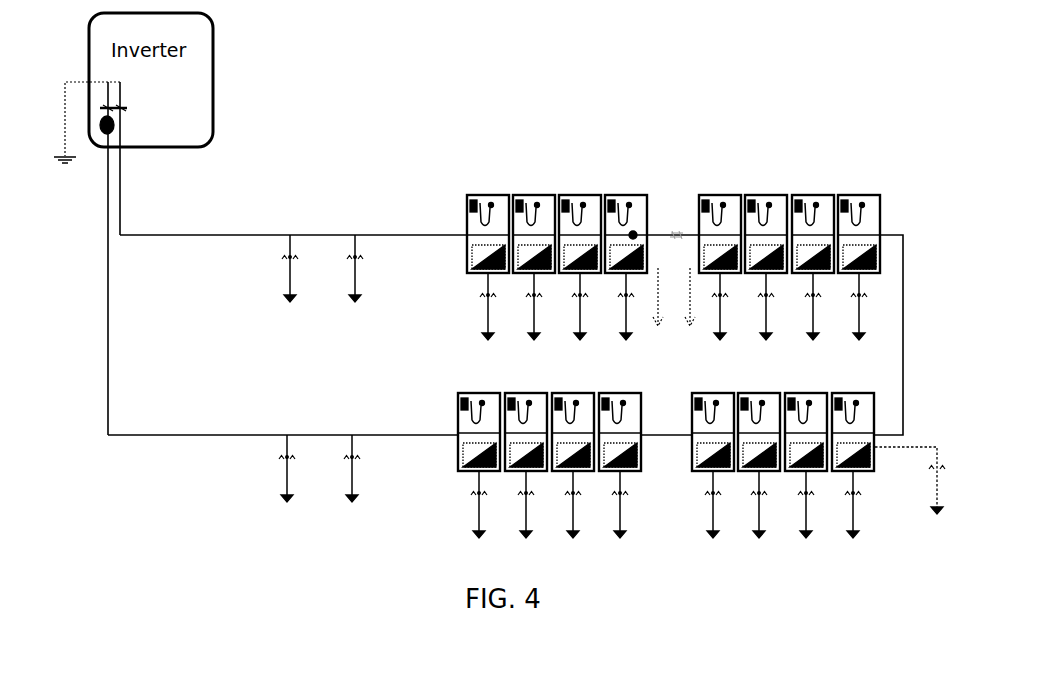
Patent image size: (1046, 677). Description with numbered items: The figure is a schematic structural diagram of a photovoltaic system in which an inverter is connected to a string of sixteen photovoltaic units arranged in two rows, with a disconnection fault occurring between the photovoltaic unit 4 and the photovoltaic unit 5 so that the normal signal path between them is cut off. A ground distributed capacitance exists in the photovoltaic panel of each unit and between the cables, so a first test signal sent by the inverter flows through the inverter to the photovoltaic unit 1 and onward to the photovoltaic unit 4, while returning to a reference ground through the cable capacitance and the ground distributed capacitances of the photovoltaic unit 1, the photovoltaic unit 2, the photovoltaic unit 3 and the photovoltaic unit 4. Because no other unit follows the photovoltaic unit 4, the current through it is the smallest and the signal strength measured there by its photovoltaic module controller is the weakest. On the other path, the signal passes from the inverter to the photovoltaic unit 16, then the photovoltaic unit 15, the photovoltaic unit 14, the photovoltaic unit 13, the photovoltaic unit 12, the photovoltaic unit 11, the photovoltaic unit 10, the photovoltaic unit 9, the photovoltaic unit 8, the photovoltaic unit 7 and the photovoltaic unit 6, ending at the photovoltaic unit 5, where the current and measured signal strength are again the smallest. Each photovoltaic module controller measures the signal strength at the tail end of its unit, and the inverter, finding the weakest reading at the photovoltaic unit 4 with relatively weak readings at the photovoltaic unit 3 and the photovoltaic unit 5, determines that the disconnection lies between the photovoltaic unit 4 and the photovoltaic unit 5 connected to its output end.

The photovoltaic unit # 1 is at (488, 255).
The photovoltaic unit # 2 is at (534, 255).
The photovoltaic unit # 3 is at (580, 255).
The photovoltaic unit # 4 is at (626, 255).
The photovoltaic unit # 5 is at (720, 255).
The photovoltaic unit # 6 is at (766, 255).
The photovoltaic unit # 7 is at (813, 255).
The photovoltaic unit # 8 is at (859, 255).
The photovoltaic unit # 9 is at (853, 453).
The photovoltaic unit # 10 is at (806, 453).
The photovoltaic unit # 11 is at (759, 453).
The photovoltaic unit # 12 is at (713, 453).
The photovoltaic unit # 13 is at (620, 453).
The photovoltaic unit # 14 is at (573, 453).
The photovoltaic unit # 15 is at (526, 453).
The photovoltaic unit # 16 is at (479, 453).